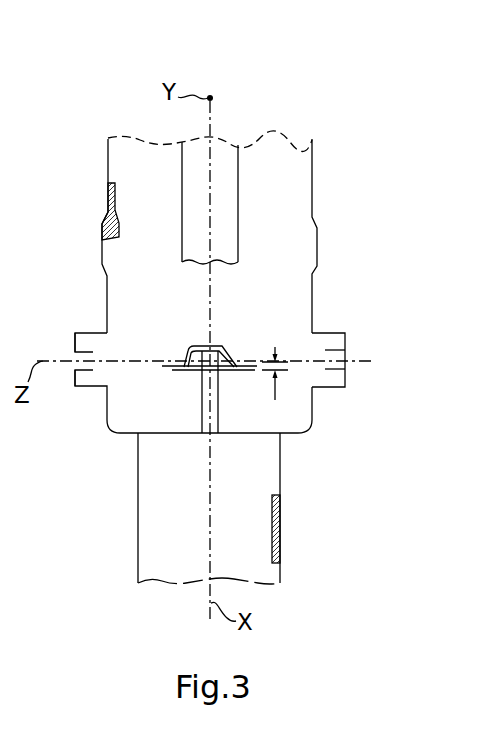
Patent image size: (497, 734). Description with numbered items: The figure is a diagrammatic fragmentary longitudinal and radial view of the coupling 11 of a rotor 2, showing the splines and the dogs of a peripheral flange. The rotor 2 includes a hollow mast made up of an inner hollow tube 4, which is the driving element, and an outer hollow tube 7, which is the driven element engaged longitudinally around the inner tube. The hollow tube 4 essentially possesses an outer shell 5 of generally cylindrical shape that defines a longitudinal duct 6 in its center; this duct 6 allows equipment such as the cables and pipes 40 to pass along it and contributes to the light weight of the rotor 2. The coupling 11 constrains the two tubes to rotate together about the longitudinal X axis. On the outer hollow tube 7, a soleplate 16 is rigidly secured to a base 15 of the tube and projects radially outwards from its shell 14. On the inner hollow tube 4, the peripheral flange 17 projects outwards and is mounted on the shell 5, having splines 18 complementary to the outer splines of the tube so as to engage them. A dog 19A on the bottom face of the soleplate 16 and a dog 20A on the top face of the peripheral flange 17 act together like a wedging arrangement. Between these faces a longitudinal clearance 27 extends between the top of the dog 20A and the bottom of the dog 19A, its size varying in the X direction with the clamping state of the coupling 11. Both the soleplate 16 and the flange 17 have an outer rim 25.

The rotor 2 is at (68, 104).
The coupling 11 is at (68, 270).
The outer hollow tube 7 is at (302, 190).
The cables and pipes 40 is at (228, 177).
The shell 14 is at (113, 192).
The base 15 is at (320, 326).
The soleplate 16 is at (88, 338).
The outer rim 25 is at (75, 340).
The peripheral flange 17 is at (110, 428).
The dog 19A is at (231, 358).
The dog 20A is at (190, 371).
The splines 18 is at (202, 424).
The longitudinal clearance 27 is at (288, 376).
The hollow tube 4 is at (128, 542).
The outer shell 5 is at (281, 525).
The longitudinal duct 6 is at (170, 570).